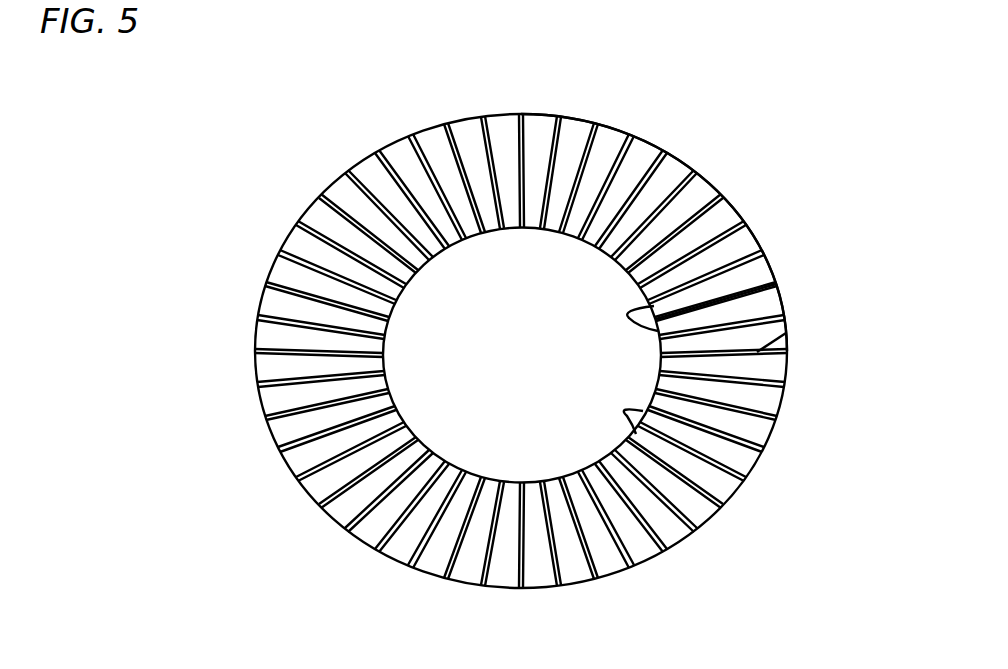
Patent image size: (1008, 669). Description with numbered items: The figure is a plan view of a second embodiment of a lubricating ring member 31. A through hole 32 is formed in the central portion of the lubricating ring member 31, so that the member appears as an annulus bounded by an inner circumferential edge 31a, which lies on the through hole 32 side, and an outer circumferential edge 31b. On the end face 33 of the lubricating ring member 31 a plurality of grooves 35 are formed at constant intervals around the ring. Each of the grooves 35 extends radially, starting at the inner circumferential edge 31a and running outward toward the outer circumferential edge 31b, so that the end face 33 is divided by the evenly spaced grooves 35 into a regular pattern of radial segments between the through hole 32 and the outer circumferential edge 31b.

The lubricating ring member 31 is at (731, 157).
The inner circumferential edge 31a is at (776, 284).
The outer circumferential edge 31b is at (737, 213).
The through hole 32 is at (757, 477).
The end face 33 is at (667, 532).
The grooves 35 is at (787, 333).